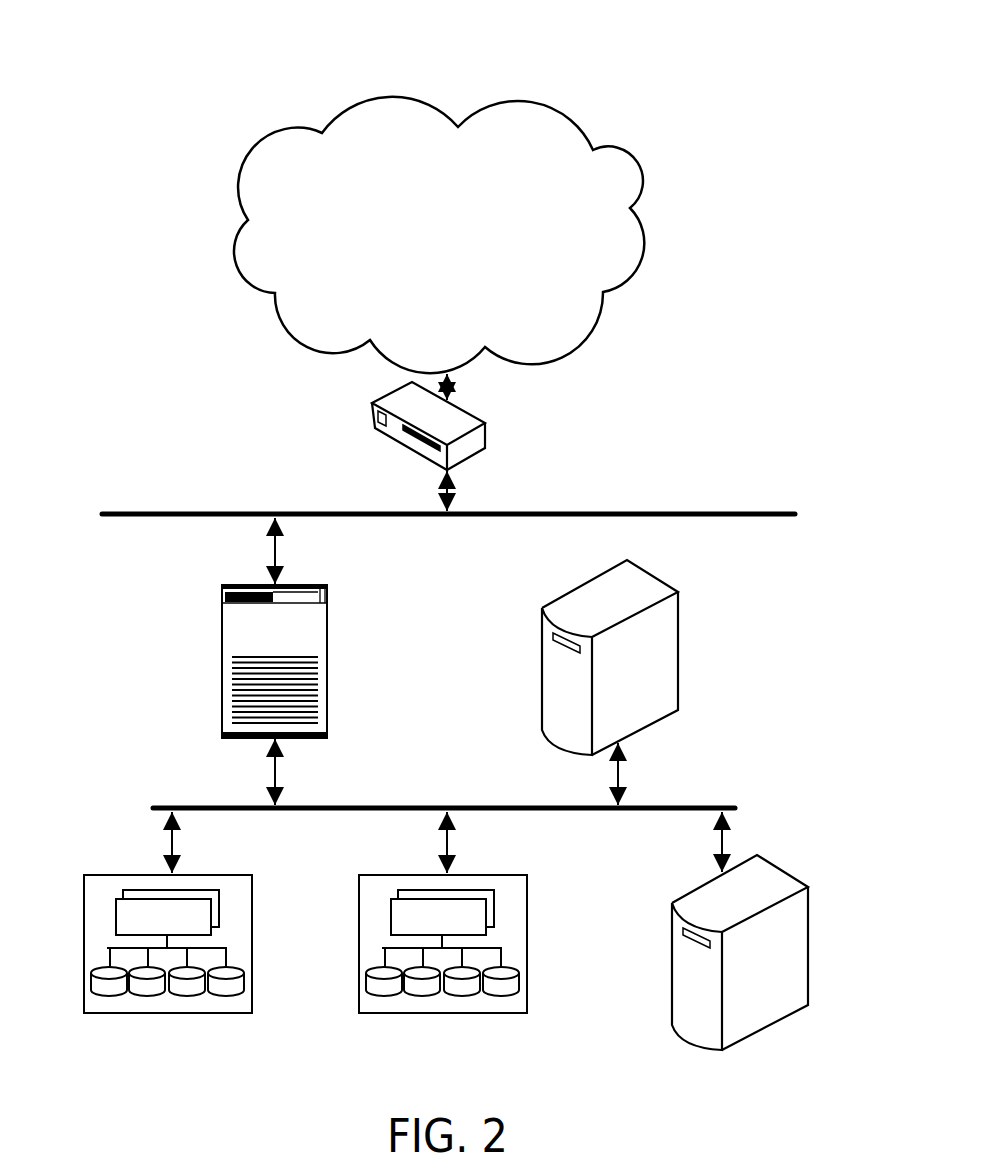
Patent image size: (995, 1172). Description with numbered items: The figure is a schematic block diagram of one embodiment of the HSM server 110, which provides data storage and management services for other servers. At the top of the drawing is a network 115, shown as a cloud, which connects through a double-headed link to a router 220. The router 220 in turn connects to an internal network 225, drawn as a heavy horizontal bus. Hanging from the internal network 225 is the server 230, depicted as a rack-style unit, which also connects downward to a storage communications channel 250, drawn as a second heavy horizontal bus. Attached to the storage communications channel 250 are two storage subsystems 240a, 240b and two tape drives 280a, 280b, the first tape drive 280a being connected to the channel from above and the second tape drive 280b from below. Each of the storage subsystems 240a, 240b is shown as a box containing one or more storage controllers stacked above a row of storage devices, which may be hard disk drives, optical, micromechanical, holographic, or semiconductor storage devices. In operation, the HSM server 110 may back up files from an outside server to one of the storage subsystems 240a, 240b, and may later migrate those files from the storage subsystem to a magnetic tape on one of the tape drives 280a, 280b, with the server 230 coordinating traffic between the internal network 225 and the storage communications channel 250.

The HSM server 110 is at (117, 63).
The network 115 is at (456, 259).
The router 220 is at (485, 422).
The internal network 225 is at (122, 511).
The server 230 is at (327, 585).
The storage communications channel 250 is at (375, 806).
The storage subsystem 240a is at (252, 875).
The storage subsystem 240b is at (527, 875).
The tape drive 280a is at (678, 612).
The tape drive 280b is at (808, 907).